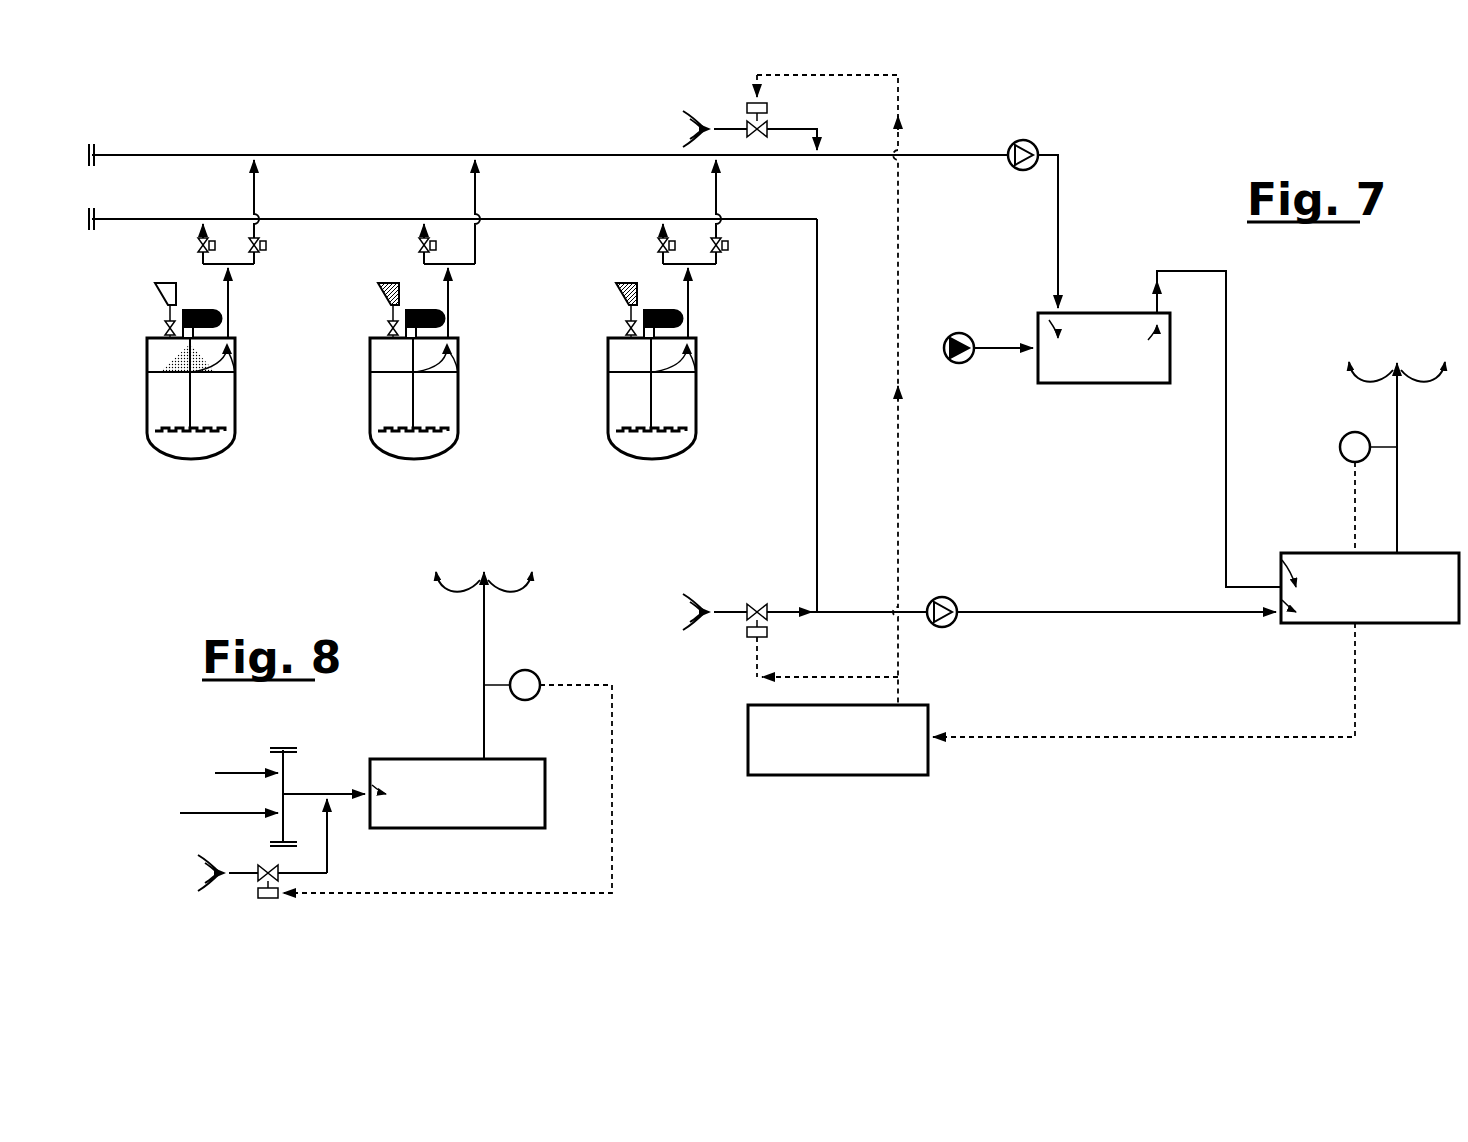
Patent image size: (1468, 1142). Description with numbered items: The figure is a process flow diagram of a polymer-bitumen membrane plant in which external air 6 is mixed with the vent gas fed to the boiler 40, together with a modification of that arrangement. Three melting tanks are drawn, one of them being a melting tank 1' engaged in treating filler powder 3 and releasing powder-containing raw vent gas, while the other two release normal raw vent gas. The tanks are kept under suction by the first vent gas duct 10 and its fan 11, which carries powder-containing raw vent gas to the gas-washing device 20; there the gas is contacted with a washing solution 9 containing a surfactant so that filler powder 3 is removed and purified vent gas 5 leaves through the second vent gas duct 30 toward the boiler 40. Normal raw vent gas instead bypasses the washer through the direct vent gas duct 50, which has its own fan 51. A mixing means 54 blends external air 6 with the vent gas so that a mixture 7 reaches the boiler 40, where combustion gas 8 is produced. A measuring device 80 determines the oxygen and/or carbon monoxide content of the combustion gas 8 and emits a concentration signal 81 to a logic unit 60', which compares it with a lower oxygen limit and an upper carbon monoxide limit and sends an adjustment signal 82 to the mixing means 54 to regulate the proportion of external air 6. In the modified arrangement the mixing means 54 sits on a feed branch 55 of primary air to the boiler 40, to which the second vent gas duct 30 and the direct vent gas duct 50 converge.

In FIG. 7, the melting tank engaged in treating filler powder 1' is at (187, 379).
In FIG. 7, the filler powder 3 is at (148, 365).
In FIG. 7, the purified vent gas 5 is at (1151, 325).
In FIG. 8, the external air 6 is at (203, 880).
In FIG. 8, the mixture of external air and vent gas 7 is at (382, 795).
In FIG. 7, the combustion gas 8 is at (1426, 376).
In FIG. 8, the combustion gas 8 is at (509, 580).
In FIG. 7, the washing solution 9 is at (1011, 350).
In FIG. 7, the first vent gas duct 10 is at (131, 154).
In FIG. 7, the suction device (fan) 11 is at (1016, 169).
In FIG. 7, the gas-washing device 20 is at (1027, 321).
In FIG. 7, the second vent gas duct 30 is at (1194, 270).
In FIG. 8, the second vent gas duct 30 is at (229, 772).
In FIG. 7, the boiler 40 is at (1299, 515).
In FIG. 8, the boiler 40 is at (441, 748).
In FIG. 7, the direct vent gas duct 50 is at (131, 218).
In FIG. 8, the direct vent gas duct 50 is at (183, 813).
In FIG. 7, the suction device (fan) for normal raw vent gas 51 is at (935, 627).
In FIG. 8, the mixing means 54 is at (256, 876).
In FIG. 8, the feed branch of primary air 55 is at (326, 792).
In FIG. 7, the logic unit 60' is at (802, 740).
In FIG. 7, the device for measuring oxygen and/or carbon monoxide content 80 is at (1341, 440).
In FIG. 8, the device for measuring oxygen and/or carbon monoxide content 80 is at (542, 676).
In FIG. 7, the concentration signal 81 is at (1269, 737).
In FIG. 8, the concentration signal 81 is at (613, 803).
In FIG. 7, the adjustment signal 82 is at (899, 488).